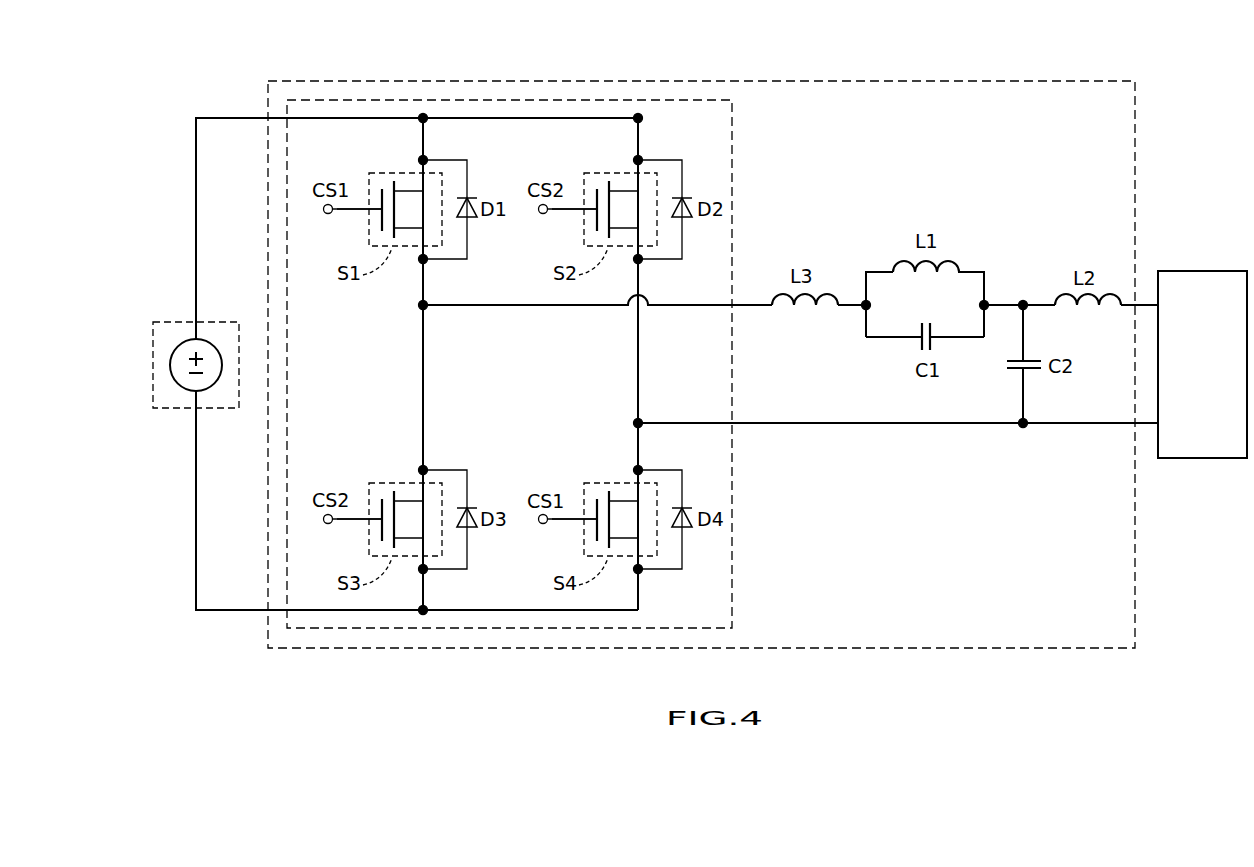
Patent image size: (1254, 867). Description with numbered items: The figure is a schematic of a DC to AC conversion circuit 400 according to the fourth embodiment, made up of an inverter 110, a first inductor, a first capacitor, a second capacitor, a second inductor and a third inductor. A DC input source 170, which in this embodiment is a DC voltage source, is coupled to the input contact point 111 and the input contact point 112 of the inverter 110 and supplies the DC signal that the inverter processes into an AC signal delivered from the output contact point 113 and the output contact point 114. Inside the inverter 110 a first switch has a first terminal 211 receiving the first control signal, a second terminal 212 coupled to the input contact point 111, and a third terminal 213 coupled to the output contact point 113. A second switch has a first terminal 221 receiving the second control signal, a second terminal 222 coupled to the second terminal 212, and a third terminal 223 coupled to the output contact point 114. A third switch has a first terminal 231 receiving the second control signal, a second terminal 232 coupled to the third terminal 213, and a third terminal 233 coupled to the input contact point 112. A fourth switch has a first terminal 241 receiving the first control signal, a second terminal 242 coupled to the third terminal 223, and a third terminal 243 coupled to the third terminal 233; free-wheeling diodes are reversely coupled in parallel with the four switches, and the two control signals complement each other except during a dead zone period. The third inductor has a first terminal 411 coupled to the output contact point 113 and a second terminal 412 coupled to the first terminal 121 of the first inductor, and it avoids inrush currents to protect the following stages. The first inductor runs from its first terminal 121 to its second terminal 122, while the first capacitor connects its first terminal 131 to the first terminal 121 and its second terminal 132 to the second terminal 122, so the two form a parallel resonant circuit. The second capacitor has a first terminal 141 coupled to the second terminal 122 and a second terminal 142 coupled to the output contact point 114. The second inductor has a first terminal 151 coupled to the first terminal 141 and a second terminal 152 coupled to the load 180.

The DC to AC conversion circuit 400 is at (1013, 80).
The inverter 110 is at (734, 148).
The DC input source 170 is at (172, 321).
The input contact point 111 is at (240, 117).
The input contact point 112 is at (242, 609).
The first terminal of the first switch 211 is at (358, 207).
The second terminal of the first switch 212 is at (417, 172).
The third terminal of the first switch 213 is at (420, 260).
The first terminal of the second switch 221 is at (573, 207).
The second terminal of the second switch 222 is at (632, 172).
The third terminal of the second switch 223 is at (635, 260).
The first terminal of the third switch 231 is at (358, 517).
The second terminal of the third switch 232 is at (417, 482).
The third terminal of the third switch 233 is at (420, 570).
The first terminal of the fourth switch 241 is at (573, 517).
The second terminal of the fourth switch 242 is at (632, 482).
The third terminal of the fourth switch 243 is at (635, 570).
The output contact point 113 is at (753, 303).
The output contact point 114 is at (752, 421).
The first terminal of the third inductor 411 is at (773, 307).
The second terminal of the third inductor 412 is at (839, 307).
The first terminal of the first inductor 121 is at (880, 271).
The second terminal of the first inductor 122 is at (970, 271).
The first terminal of the first capacitor 131 is at (890, 339).
The second terminal of the first capacitor 132 is at (955, 339).
The first terminal of the second inductor 151 is at (1043, 302).
The second terminal of the second inductor 152 is at (1128, 302).
The first terminal of the second capacitor 141 is at (1027, 338).
The second terminal of the second capacitor 142 is at (1027, 400).
The load 180 is at (1203, 270).